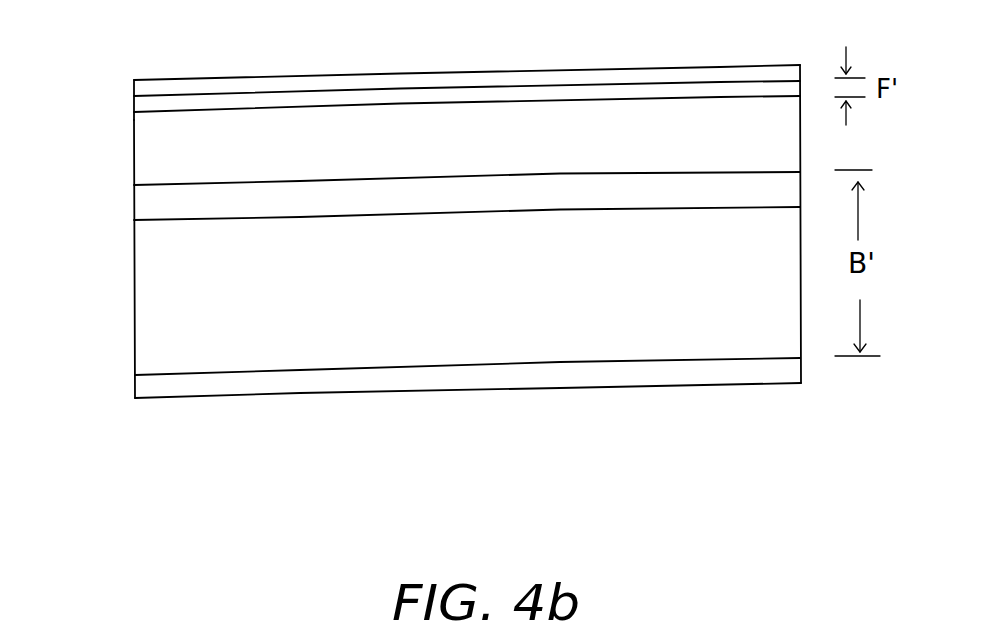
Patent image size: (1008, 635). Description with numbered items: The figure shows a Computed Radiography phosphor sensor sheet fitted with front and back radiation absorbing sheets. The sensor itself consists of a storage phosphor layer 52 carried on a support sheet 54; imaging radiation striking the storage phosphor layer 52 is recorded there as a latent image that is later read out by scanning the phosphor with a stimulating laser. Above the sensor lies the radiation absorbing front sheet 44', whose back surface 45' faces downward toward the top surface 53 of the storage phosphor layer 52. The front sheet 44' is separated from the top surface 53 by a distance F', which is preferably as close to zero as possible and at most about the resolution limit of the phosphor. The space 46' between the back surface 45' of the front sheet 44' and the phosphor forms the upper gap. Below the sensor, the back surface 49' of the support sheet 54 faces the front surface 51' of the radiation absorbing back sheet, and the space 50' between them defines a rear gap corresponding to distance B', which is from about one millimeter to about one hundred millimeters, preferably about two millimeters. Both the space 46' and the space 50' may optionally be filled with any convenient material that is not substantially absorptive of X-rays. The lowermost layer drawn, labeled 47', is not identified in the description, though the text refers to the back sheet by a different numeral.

The radiation absorbing front sheet 44' is at (467, 60).
The back surface of front sheet 45' is at (467, 57).
The top surface of storage phosphor layer 53 is at (327, 105).
The space 46' is at (106, 100).
The storage phosphor layer 52 is at (150, 148).
The support sheet 54 is at (150, 202).
The back surface of support sheet 49' is at (544, 224).
The space 50' is at (111, 259).
The front surface of back sheet 51' is at (467, 343).
The bottom layer 47' is at (433, 404).